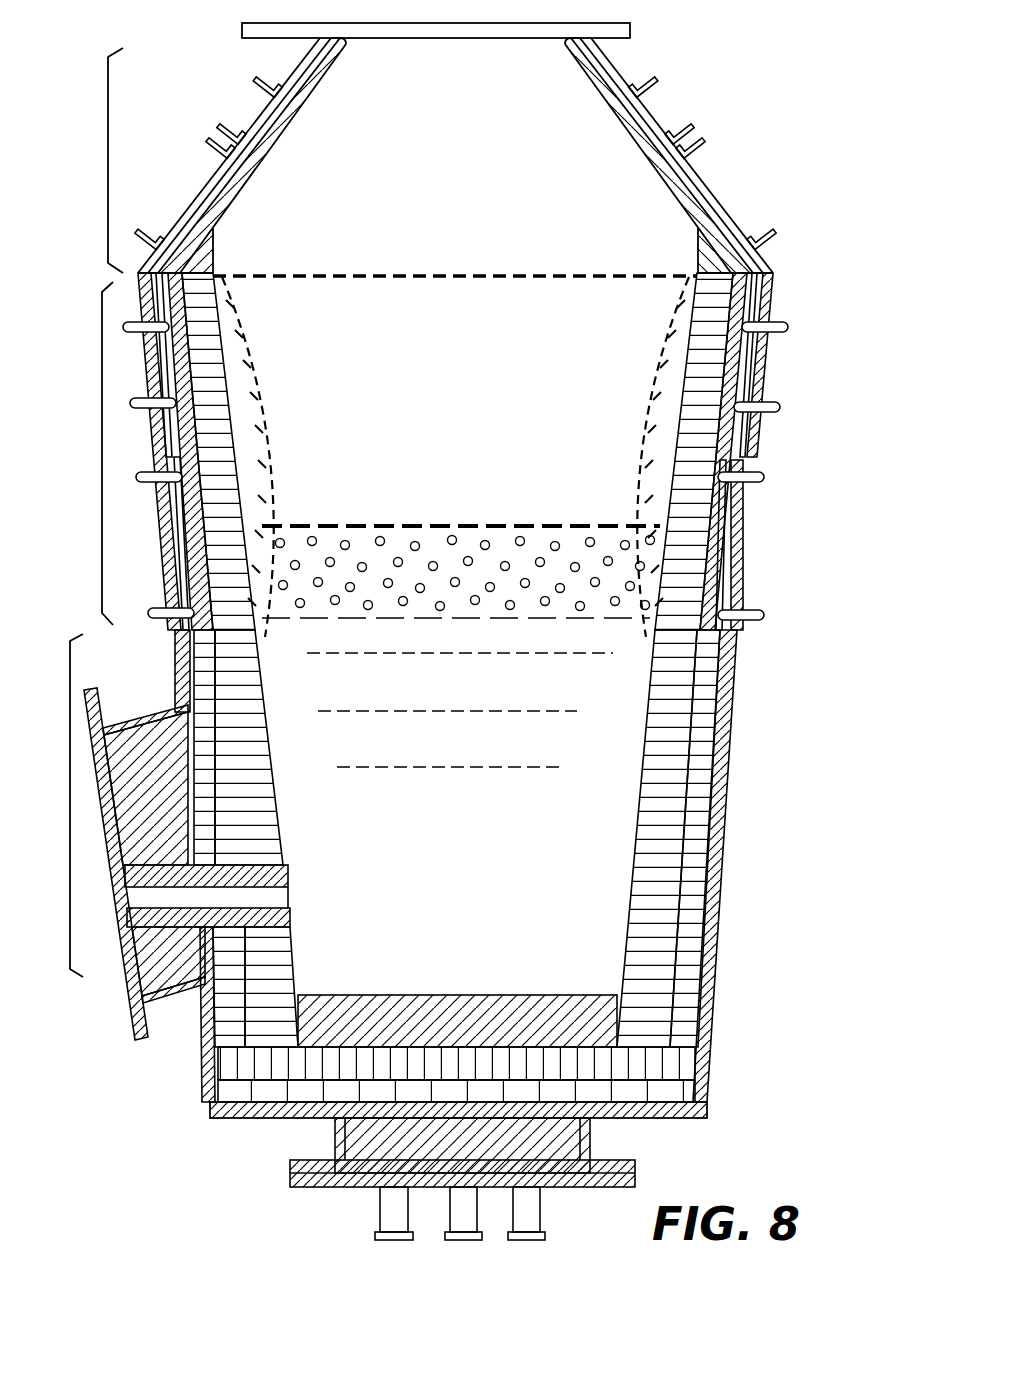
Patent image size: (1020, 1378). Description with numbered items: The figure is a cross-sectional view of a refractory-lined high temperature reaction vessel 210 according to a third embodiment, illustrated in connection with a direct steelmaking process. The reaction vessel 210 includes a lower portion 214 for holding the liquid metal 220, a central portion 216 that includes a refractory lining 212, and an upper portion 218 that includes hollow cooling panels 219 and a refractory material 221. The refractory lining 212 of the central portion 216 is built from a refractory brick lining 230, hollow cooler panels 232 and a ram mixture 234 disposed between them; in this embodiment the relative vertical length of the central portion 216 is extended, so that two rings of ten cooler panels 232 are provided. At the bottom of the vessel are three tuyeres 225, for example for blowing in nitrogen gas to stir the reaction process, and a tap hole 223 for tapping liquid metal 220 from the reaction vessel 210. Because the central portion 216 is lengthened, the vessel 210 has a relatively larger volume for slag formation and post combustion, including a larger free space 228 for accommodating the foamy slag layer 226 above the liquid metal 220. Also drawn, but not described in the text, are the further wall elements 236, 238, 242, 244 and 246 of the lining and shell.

The high temperature reaction vessel 210 is at (790, 174).
The refractory lining 212 is at (280, 366).
The lower portion 214 is at (380, 908).
The central portion 216 is at (458, 455).
The upper portion 218 is at (424, 155).
The hollow cooling panels 219 is at (700, 166).
The liquid metal 220 is at (602, 686).
The refractory material 221 is at (645, 105).
The tap hole 223 is at (103, 906).
The tuyeres 225 is at (518, 1210).
The foamy slag layer 226 is at (459, 562).
The free space 228 is at (525, 304).
The refractory brick lining 230 is at (703, 410).
The hollow cooler panels 232 is at (740, 378).
The ram mixture 234 is at (740, 310).
The lower shell membrane 236 is at (752, 528).
The refractory brick lining 238 is at (683, 352).
The charge level line 242 is at (262, 556).
The right inner lining layer 244 is at (660, 468).
The cooling pipes 246 is at (748, 408).